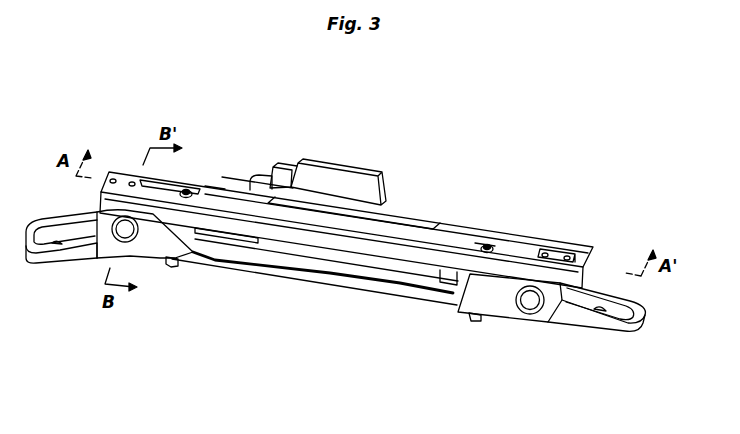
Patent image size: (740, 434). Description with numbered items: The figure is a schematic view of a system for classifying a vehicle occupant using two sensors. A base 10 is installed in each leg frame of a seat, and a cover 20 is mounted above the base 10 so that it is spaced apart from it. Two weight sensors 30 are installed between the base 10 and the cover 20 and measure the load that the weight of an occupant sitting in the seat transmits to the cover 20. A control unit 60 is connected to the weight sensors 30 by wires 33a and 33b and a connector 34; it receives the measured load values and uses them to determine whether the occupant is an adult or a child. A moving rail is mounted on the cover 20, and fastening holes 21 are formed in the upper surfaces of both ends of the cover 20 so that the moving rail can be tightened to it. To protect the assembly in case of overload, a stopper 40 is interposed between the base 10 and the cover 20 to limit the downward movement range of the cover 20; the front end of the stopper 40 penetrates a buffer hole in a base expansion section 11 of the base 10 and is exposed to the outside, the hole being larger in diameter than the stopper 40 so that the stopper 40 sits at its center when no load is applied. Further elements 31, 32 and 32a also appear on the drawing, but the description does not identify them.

The base 10 is at (336, 296).
The base expansion section 11 is at (555, 306).
The cover 20 is at (546, 226).
The fastening holes 21 is at (132, 182).
The weight sensors 30 is at (183, 253).
The pin 31 is at (171, 267).
The bolt 32 is at (186, 190).
The slot 32a is at (215, 185).
The wire 33a is at (262, 177).
The wire 33b is at (442, 272).
The connector 34 is at (288, 176).
The stopper 40 is at (122, 232).
The control unit 60 is at (345, 182).